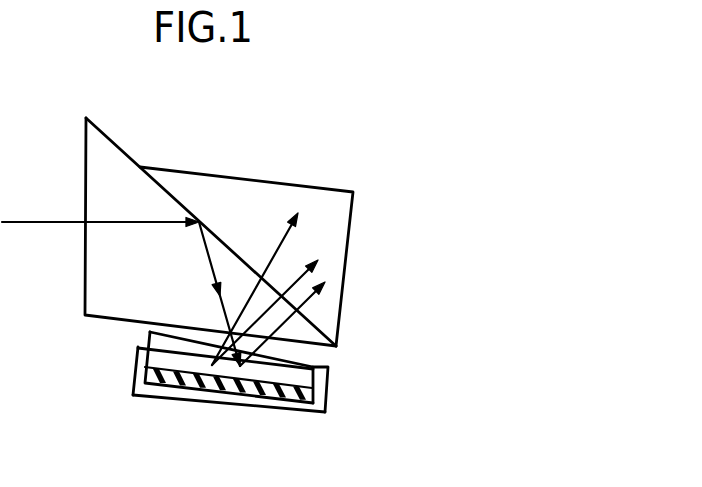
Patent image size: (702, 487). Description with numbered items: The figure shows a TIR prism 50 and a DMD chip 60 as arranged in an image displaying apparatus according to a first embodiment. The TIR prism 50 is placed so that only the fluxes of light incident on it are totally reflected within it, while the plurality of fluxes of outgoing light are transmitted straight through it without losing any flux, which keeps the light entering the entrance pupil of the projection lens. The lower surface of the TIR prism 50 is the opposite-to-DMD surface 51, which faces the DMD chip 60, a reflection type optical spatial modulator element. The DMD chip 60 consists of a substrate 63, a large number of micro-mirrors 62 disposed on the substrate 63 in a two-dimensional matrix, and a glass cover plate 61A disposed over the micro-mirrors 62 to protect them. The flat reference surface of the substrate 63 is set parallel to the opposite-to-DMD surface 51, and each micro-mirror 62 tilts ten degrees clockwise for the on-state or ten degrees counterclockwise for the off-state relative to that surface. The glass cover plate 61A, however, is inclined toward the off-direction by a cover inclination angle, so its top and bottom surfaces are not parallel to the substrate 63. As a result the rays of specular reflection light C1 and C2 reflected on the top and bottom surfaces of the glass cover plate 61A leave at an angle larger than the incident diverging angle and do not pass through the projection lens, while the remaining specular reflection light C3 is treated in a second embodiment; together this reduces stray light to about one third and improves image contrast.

The TIR prism 50 is at (183, 172).
The opposite-to-DMD surface 51 is at (114, 317).
The DMD chip 60 is at (133, 388).
The glass cover plate 61A is at (318, 360).
The micro-mirrors 62 is at (215, 388).
The substrate 63 is at (300, 408).
The specular reflection light C1 is at (311, 270).
The specular reflection light C2 is at (311, 292).
The specular reflection light C3 is at (284, 238).